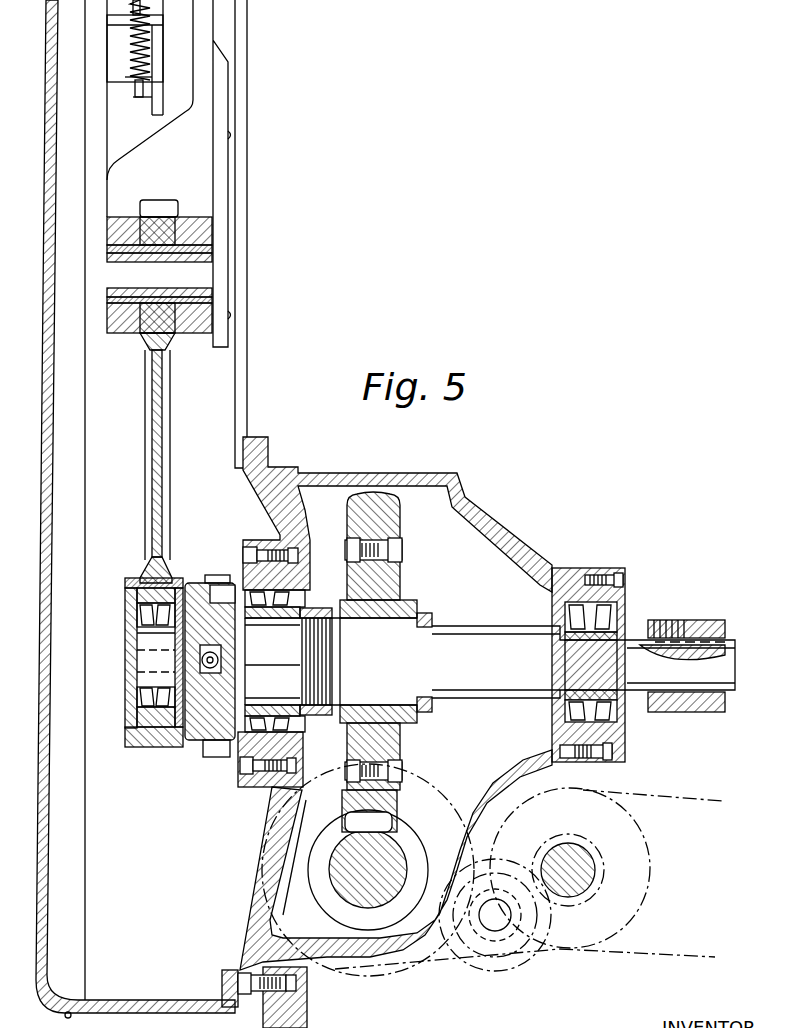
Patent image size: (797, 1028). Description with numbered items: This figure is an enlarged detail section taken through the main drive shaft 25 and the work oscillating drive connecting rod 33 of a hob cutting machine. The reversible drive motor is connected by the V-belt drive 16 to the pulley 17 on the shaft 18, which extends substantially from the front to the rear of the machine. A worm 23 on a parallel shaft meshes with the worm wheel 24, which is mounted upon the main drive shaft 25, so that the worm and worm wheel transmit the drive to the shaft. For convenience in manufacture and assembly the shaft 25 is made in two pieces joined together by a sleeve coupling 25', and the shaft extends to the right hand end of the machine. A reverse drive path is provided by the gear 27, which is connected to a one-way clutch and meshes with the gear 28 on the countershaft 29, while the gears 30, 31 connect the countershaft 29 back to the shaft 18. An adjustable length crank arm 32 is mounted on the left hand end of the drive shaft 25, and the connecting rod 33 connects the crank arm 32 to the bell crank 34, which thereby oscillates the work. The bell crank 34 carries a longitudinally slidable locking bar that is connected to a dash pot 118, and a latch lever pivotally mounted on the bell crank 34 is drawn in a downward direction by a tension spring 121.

The V-belt drive 16 is at (709, 810).
The pulley 17 is at (637, 824).
The shaft 18 is at (585, 869).
The worm 23 is at (371, 912).
The worm wheel 24 is at (393, 795).
The main drive shaft 25 is at (490, 654).
The sleeve coupling 25' is at (686, 652).
The gear 27 is at (447, 806).
The gear 28 is at (498, 880).
The countershaft 29 is at (493, 912).
The gear 30 is at (546, 929).
The gear 31 is at (582, 839).
The adjustable length crank arm 32 is at (197, 735).
The connecting rod 33 is at (145, 424).
The bell crank 34 is at (140, 146).
The dash pot 118 is at (107, 45).
The tension spring 121 is at (130, 78).